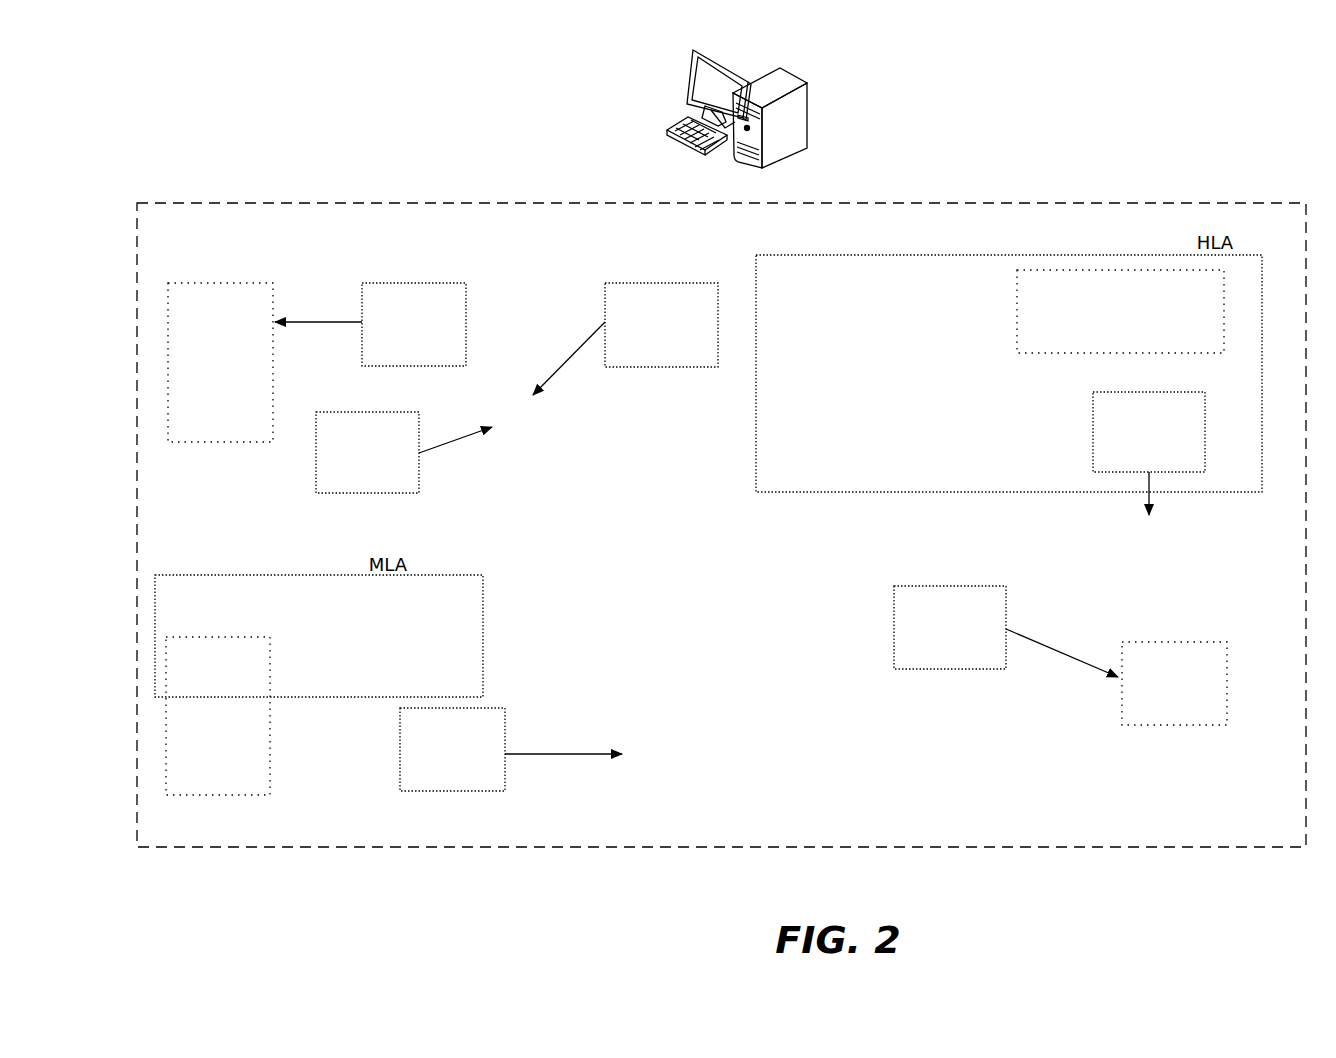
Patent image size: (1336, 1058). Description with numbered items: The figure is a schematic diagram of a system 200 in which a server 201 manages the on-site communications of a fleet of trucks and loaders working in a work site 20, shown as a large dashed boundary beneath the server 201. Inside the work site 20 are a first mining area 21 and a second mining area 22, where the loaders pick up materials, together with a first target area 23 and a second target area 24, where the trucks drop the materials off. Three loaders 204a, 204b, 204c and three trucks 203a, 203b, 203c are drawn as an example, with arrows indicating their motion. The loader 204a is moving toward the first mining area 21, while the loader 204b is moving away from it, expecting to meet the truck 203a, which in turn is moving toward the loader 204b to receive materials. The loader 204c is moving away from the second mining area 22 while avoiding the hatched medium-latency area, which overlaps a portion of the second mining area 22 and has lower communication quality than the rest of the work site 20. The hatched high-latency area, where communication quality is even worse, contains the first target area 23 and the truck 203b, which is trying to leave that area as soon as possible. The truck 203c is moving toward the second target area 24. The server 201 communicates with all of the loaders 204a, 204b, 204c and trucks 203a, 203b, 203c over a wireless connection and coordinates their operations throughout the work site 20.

The system 200 is at (1297, 102).
The server 201 is at (763, 104).
The work site 20 is at (721, 509).
The first mining area 21 is at (220, 362).
The second mining area 22 is at (218, 716).
The first target area 23 is at (1120, 311).
The second target area 24 is at (1174, 683).
The truck 203a is at (625, 339).
The truck 203b is at (1149, 453).
The truck 203c is at (1006, 631).
The loader 204a is at (370, 324).
The loader 204b is at (404, 452).
The loader 204c is at (511, 749).